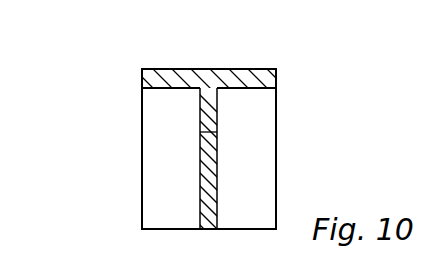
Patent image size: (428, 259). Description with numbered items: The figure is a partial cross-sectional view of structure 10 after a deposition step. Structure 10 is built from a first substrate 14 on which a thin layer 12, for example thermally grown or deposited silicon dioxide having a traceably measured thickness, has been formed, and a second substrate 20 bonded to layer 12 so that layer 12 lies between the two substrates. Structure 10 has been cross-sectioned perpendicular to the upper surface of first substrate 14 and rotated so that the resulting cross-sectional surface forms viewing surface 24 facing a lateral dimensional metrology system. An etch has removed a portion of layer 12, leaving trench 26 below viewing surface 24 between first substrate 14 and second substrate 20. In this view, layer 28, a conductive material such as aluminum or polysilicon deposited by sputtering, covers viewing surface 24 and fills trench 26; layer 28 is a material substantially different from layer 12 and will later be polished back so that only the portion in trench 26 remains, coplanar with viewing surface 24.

The structure 10 is at (106, 84).
The layer 12 is at (208, 182).
The first substrate 14 is at (181, 226).
The second substrate 20 is at (260, 226).
The viewing surface 24 is at (267, 77).
The trench 26 is at (208, 98).
The layer 28 is at (179, 79).